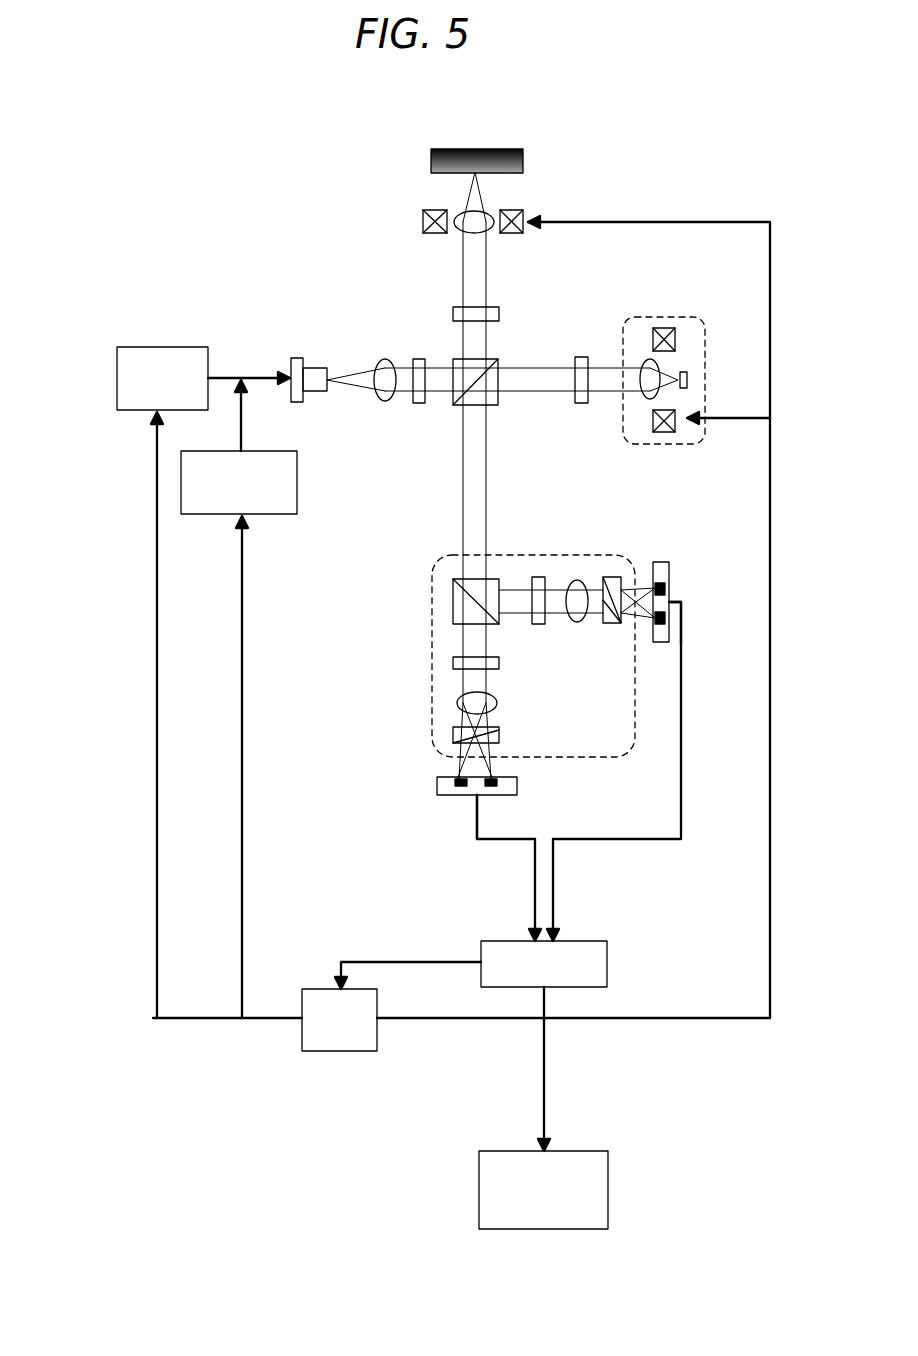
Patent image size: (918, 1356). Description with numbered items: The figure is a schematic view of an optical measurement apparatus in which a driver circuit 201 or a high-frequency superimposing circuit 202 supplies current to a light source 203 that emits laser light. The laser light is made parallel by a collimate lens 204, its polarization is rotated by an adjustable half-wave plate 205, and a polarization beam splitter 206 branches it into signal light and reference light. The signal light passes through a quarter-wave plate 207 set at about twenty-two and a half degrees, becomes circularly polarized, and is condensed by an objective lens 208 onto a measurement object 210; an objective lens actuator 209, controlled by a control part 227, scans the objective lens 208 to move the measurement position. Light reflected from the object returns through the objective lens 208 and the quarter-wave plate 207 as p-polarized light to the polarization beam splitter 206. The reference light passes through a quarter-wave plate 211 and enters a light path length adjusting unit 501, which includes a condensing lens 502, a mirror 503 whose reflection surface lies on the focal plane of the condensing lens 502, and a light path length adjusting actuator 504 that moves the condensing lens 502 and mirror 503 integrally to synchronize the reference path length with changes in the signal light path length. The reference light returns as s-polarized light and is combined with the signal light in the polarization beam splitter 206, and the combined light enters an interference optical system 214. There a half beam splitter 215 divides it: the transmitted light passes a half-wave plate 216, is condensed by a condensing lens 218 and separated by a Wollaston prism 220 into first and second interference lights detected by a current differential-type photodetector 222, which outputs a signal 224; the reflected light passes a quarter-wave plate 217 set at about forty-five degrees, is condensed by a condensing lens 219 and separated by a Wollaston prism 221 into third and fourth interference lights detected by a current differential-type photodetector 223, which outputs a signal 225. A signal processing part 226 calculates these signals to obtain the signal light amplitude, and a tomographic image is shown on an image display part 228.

The driver circuit 201 is at (117, 378).
The high-frequency superimposing circuit 202 is at (297, 490).
The light source 203 is at (293, 360).
The collimate lens 204 is at (375, 368).
The λ/2 plate 205 is at (418, 404).
The polarization beam splitter 206 is at (453, 365).
The λ/4 plate 207 is at (453, 310).
The objective lens 208 is at (485, 228).
The objective lens actuator 209 is at (523, 213).
The measurement object 210 is at (431, 155).
The λ/4 plate 211 is at (582, 357).
The interference optical system 214 is at (635, 685).
The half beam splitter 215 is at (453, 605).
The λ/2 plate 216 is at (499, 662).
The λ/4 plate 217 is at (538, 577).
The condensing lens 218 is at (497, 703).
The condensing lens 219 is at (576, 580).
The Wollaston prism 220 is at (499, 735).
The Wollaston prism 221 is at (615, 577).
The current differential-type photodetector 222 is at (517, 786).
The current differential-type photodetector 223 is at (665, 562).
The signal 224 is at (477, 815).
The signal 225 is at (681, 620).
The signal processing part 226 is at (493, 941).
The control part 227 is at (310, 1051).
The image display part 228 is at (608, 1192).
The light path length adjusting unit 501 is at (640, 317).
The condensing lens 502 is at (640, 395).
The mirror 503 is at (688, 375).
The light path length adjusting actuator 504 is at (667, 328).